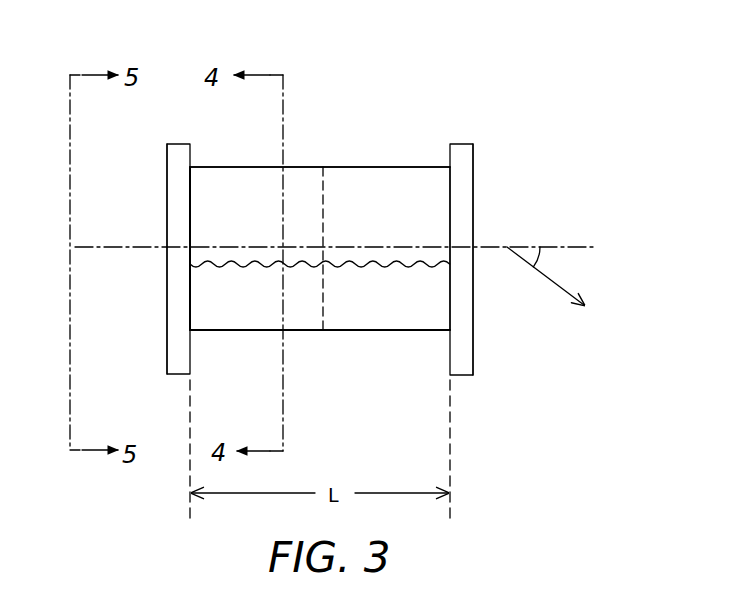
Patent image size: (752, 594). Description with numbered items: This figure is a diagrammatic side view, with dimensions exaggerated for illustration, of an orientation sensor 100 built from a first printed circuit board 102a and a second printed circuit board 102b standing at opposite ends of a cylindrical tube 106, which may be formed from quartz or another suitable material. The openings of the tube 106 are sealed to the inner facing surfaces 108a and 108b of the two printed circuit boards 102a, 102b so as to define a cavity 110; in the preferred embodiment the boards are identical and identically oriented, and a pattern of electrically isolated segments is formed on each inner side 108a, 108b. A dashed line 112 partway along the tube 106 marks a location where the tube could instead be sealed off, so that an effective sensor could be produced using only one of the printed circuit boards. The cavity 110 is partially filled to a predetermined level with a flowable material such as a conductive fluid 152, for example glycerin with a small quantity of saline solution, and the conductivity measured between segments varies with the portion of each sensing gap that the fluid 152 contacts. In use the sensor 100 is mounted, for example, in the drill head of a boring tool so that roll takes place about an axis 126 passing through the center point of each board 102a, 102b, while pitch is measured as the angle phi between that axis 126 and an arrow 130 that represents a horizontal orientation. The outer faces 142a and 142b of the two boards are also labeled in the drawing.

The orientation sensor 100 is at (454, 106).
The first printed circuit board 102a is at (178, 144).
The second printed circuit board 102b is at (473, 167).
The cylindrical tube 106 is at (383, 167).
The inner facing surface of first printed circuit board 108a is at (192, 350).
The inner facing surface of second printed circuit board 108b is at (448, 352).
The cavity 110 is at (353, 183).
The dashed line 112 is at (323, 332).
The axis 126 is at (552, 247).
The arrow 130 is at (580, 292).
The first flange face 142a is at (167, 278).
The second flange face 142b is at (475, 352).
The conductive fluid 152 is at (232, 262).